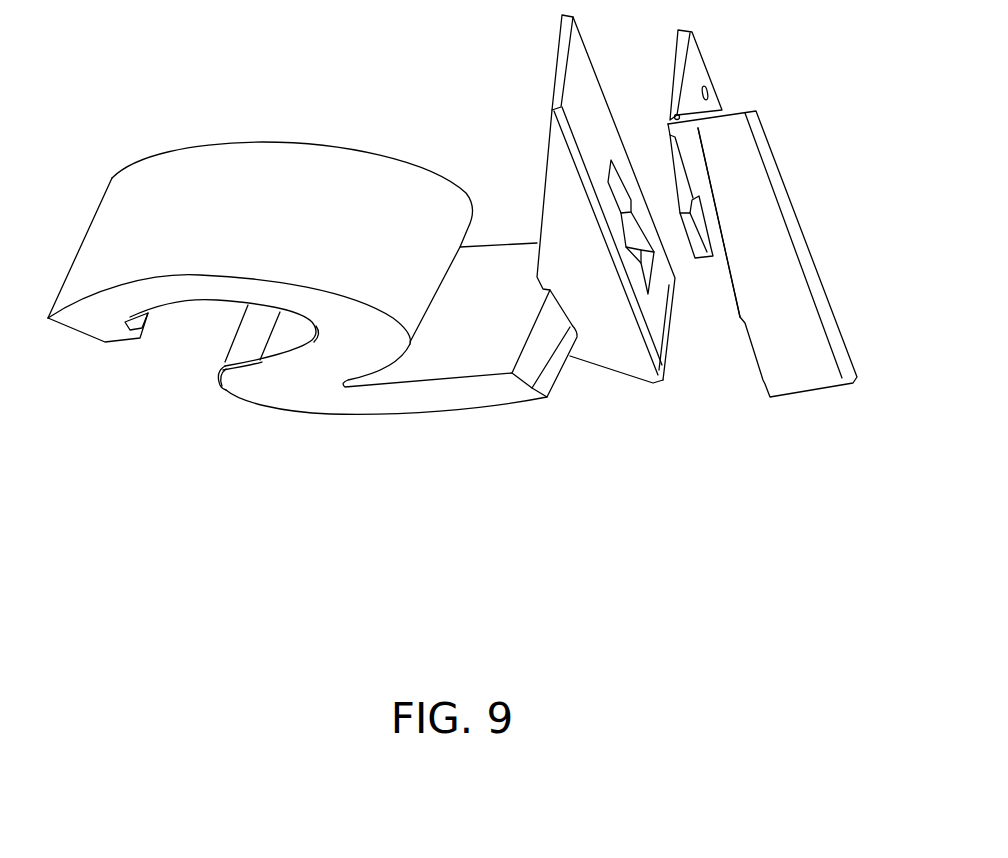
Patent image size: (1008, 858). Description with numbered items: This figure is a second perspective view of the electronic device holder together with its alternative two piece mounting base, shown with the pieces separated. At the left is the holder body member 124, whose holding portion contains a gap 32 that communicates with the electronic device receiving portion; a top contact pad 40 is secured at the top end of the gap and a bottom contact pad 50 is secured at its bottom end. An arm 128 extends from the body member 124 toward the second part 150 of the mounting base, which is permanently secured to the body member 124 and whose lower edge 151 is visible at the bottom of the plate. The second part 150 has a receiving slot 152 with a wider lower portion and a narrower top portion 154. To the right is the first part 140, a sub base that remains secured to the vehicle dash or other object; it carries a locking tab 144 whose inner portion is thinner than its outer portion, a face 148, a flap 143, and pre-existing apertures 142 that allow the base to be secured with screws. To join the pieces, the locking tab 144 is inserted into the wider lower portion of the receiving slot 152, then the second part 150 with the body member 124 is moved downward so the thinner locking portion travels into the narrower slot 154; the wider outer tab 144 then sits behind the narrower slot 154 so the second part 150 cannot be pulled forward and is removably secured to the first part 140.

The body member 124 is at (343, 120).
The gap 32 is at (178, 336).
The top contact pad 40 is at (147, 334).
The bottom contact pad 50 is at (218, 364).
The arm 128 is at (363, 397).
The second part 150 is at (601, 286).
The lower edge of plate 151 is at (668, 350).
The receiving slot 152 is at (637, 227).
The top portion 154 is at (617, 178).
The first part 140 is at (788, 159).
The apertures 142 is at (710, 93).
The flap 143 is at (692, 72).
The locking tab 144 is at (700, 258).
The bracket face 148 is at (780, 247).